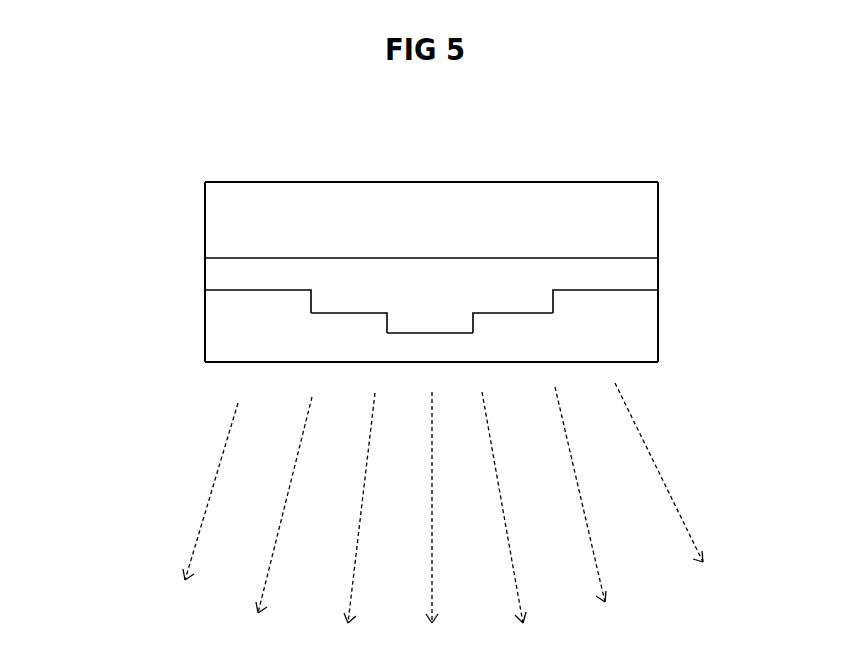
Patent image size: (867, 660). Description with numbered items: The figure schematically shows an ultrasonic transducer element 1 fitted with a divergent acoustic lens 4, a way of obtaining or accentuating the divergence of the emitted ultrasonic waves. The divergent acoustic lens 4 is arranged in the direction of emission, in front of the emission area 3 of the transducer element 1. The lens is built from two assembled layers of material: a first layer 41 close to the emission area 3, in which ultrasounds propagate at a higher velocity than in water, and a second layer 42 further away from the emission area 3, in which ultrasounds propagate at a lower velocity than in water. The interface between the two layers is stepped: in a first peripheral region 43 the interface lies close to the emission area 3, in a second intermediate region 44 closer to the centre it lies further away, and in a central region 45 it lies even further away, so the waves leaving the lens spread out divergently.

The ultrasonic transducer element 1 is at (562, 162).
The emission area 3 is at (645, 260).
The divergent acoustic lens 4 is at (122, 343).
The first layer 41 is at (205, 272).
The second layer 42 is at (205, 353).
The first peripheral region 43 is at (205, 292).
The second intermediate region 44 is at (350, 313).
The central region 45 is at (433, 333).